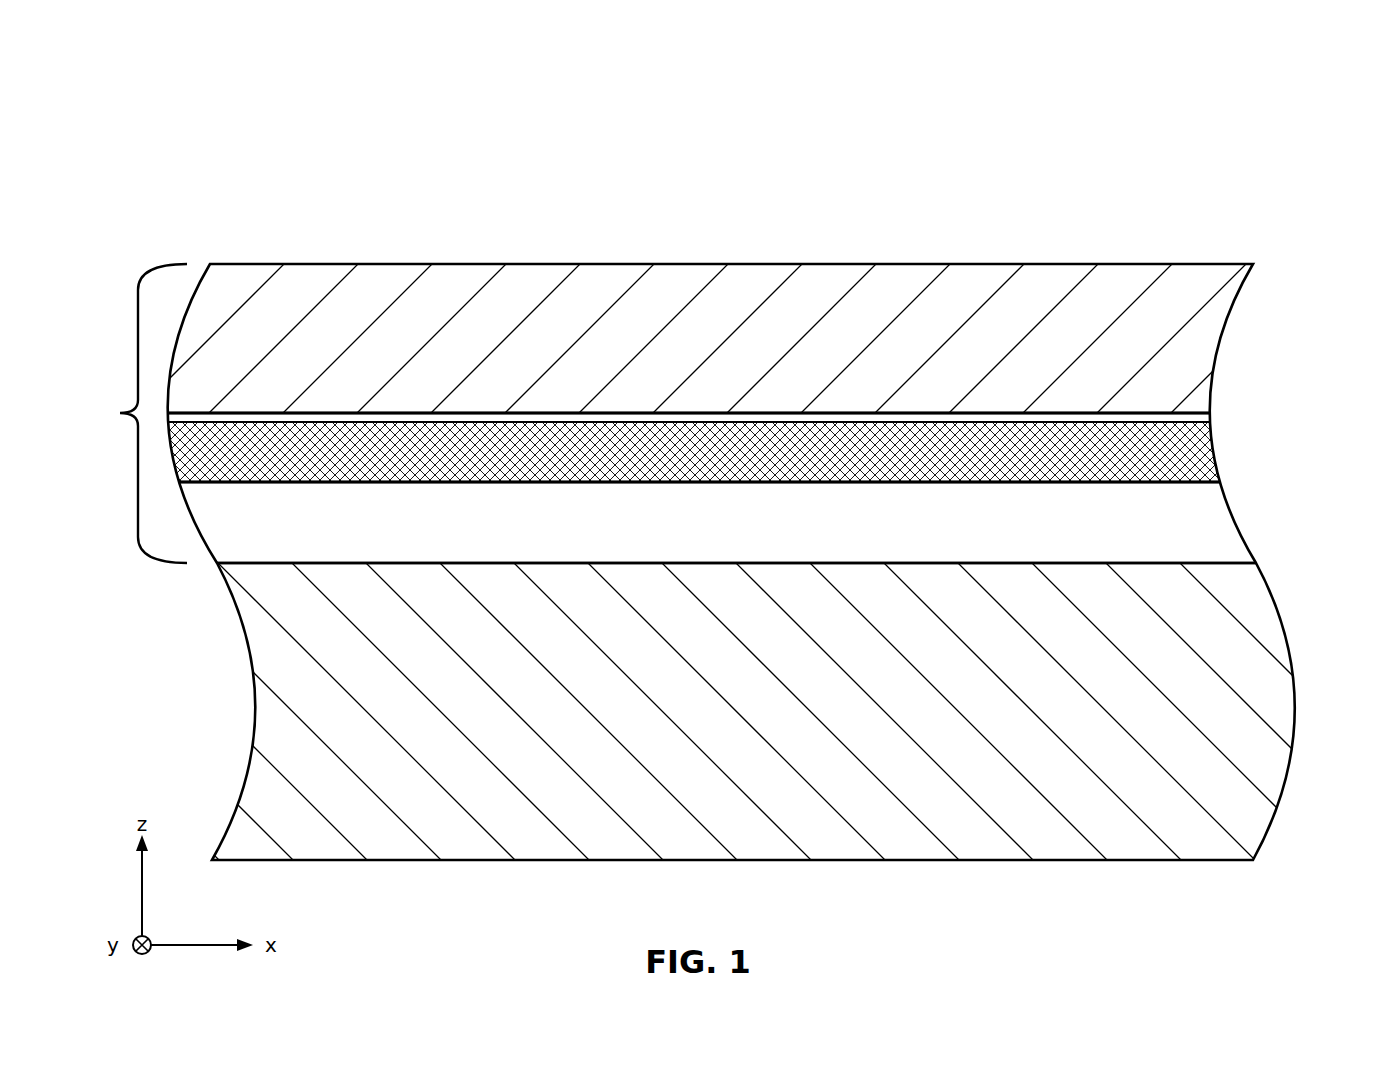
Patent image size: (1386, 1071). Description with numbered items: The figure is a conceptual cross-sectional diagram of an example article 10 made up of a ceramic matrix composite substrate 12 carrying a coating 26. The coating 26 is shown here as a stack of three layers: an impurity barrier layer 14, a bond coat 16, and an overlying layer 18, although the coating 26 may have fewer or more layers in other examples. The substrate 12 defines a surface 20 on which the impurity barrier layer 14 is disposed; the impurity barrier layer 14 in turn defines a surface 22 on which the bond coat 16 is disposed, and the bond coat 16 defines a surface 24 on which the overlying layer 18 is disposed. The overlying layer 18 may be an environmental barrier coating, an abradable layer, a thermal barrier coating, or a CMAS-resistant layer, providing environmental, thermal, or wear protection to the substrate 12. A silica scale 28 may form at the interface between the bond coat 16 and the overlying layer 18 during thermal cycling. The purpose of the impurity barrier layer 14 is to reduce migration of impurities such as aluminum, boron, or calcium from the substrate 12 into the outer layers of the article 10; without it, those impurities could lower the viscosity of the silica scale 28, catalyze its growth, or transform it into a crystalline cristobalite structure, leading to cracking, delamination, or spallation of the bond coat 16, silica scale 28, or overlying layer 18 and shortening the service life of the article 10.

The article 10 is at (1190, 118).
The substrate 12 is at (1278, 700).
The impurity barrier layer 14 is at (1233, 553).
The bond coat 16 is at (1208, 477).
The overlying layer 18 is at (1212, 327).
The surface 20 is at (897, 563).
The surface 22 is at (717, 480).
The surface 24 is at (477, 417).
The coating 26 is at (135, 413).
The silica scale 28 is at (1208, 420).